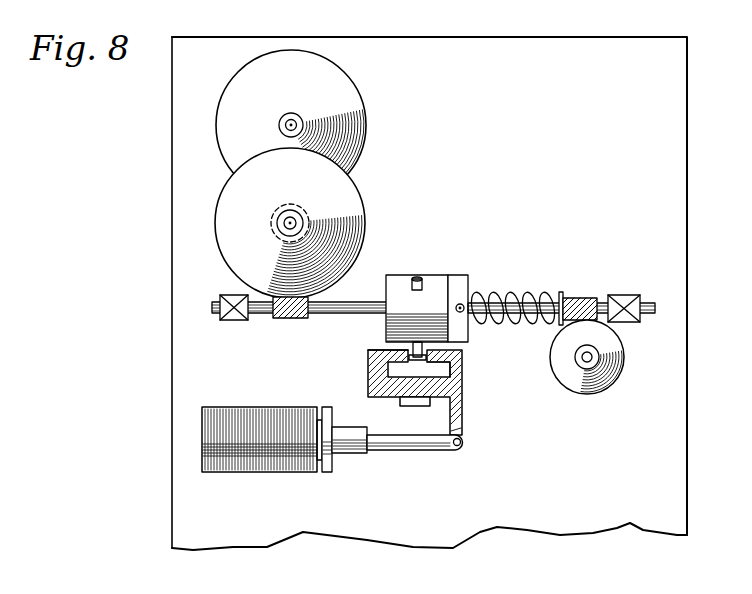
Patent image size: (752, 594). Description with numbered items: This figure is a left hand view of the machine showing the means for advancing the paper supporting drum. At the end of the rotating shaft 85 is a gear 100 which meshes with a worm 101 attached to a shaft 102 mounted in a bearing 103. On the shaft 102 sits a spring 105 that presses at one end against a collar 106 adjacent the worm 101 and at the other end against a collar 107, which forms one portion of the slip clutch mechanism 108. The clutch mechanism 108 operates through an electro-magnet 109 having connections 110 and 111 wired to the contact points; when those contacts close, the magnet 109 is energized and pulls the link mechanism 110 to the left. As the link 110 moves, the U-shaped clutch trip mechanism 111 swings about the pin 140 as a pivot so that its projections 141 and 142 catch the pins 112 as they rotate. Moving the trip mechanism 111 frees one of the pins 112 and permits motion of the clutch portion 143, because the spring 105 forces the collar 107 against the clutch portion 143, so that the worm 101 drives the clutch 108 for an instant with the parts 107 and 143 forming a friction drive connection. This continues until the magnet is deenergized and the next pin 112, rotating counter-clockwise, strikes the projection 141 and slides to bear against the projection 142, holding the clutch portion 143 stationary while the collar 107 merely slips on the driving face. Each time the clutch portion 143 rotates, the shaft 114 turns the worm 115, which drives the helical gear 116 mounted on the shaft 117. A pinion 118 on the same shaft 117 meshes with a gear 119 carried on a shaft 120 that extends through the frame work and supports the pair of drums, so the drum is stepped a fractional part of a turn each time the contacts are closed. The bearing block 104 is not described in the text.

The rotating shaft 85 is at (583, 362).
The gear 100 is at (605, 385).
The worm 101 is at (581, 296).
The shaft 102 is at (601, 305).
The bearing 103 is at (636, 296).
The bearing block 104 is at (242, 321).
The spring 105 is at (511, 292).
The collar 106 is at (562, 291).
The collar 107 is at (467, 290).
The slip clutch mechanism 108 is at (449, 276).
The electro-magnet 109 is at (291, 405).
The link mechanism 110 is at (437, 452).
The U-shaped clutch trip mechanism 111 is at (376, 371).
The pins 112 is at (418, 275).
The shaft 114 is at (326, 313).
The worm 115 is at (284, 319).
The helical gear 116 is at (366, 252).
The shaft 117 is at (302, 224).
The pinion 118 is at (276, 219).
The gear 119 is at (366, 121).
The shaft 120 is at (300, 120).
The pin 140 is at (412, 391).
The projection 141 is at (395, 352).
The projection 142 is at (445, 364).
The clutch portion 143 is at (387, 293).